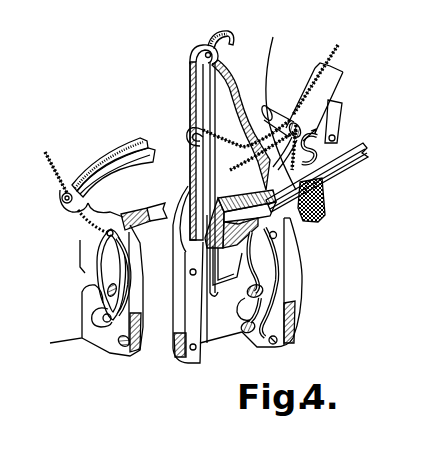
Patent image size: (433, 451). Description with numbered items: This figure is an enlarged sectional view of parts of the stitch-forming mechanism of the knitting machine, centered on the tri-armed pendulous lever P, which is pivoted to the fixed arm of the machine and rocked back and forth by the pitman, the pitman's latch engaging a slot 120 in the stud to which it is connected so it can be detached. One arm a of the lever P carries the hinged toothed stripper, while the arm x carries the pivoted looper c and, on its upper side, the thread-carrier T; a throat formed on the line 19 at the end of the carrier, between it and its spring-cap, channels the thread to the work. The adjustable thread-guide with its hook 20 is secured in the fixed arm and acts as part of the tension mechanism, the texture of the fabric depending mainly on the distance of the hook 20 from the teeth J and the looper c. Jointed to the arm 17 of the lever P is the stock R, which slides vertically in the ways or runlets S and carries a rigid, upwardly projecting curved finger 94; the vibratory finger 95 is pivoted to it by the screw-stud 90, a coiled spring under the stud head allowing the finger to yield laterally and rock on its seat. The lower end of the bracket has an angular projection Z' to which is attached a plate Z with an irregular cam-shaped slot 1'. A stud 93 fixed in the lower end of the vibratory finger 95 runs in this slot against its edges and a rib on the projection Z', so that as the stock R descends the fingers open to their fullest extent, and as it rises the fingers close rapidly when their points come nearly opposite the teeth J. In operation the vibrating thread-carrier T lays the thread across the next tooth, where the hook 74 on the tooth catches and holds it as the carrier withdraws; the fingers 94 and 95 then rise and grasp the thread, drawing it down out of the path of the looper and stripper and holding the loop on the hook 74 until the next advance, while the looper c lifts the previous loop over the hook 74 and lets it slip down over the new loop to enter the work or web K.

The arm of the lever P 17 is at (211, 47).
The throat line 19 is at (285, 178).
The hook of the thread-guide 20 is at (250, 145).
The hook on the tooth 74 is at (144, 215).
The screw-stud 90 is at (118, 290).
The stud 93 is at (103, 319).
The curved finger 94 is at (249, 257).
The vibratory finger 95 is at (275, 267).
The slot in the stud 120 is at (281, 108).
The stock R is at (204, 179).
The way or runlet S is at (188, 274).
The tri-armed pendulous lever P is at (241, 172).
The arm of the lever P a is at (240, 266).
The loop h is at (187, 133).
The thread-carrier T is at (201, 140).
The chain e is at (197, 136).
The arm of the lever P x is at (331, 121).
The looper c is at (309, 150).
The teeth J is at (257, 193).
The work or web K is at (317, 200).
The plate Z is at (251, 282).
The angular projection Z' is at (284, 226).
The pivot d is at (267, 239).
The cam-shaped slot 1' is at (236, 309).